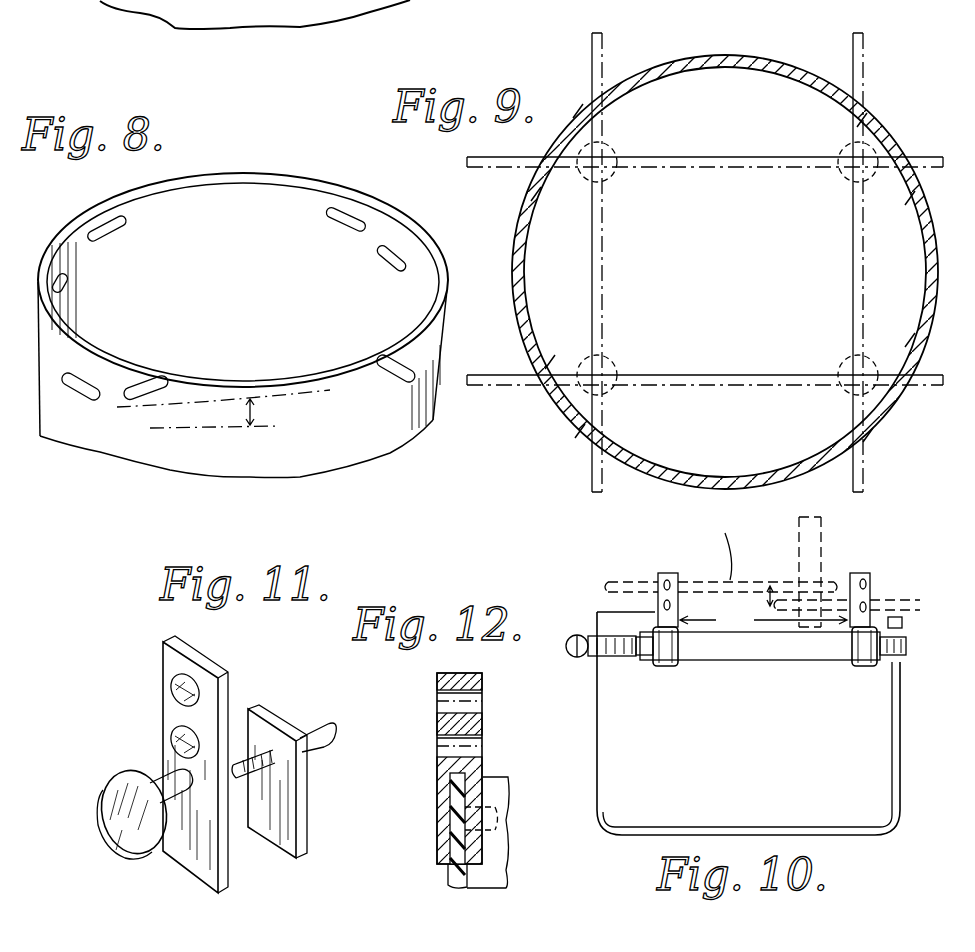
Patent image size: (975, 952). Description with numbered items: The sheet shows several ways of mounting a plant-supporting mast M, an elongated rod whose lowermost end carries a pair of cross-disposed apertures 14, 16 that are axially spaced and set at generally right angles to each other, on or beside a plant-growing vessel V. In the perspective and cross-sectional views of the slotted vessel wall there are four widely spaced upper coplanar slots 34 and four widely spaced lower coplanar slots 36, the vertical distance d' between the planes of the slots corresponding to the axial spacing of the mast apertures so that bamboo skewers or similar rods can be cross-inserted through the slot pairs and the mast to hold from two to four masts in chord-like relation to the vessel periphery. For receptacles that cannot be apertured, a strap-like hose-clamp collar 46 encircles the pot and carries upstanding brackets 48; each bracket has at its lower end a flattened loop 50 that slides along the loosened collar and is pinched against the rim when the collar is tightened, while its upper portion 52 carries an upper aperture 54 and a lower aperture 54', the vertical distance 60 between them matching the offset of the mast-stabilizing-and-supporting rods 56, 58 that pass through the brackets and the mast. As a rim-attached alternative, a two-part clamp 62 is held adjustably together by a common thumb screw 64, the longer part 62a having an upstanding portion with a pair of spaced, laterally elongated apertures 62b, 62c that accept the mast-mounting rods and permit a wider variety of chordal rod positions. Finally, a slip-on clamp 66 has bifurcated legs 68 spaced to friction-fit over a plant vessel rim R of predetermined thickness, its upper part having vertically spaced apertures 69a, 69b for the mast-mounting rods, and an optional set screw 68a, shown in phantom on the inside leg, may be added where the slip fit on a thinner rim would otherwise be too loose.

In FIG. 8, the upper coplanar slots 34 is at (125, 229).
In FIG. 9, the upper coplanar slots 34 is at (593, 110).
In FIG. 8, the lower coplanar slots 36 is at (65, 282).
In FIG. 9, the lower coplanar slots 36 is at (537, 187).
In FIG. 8, the vertical distance between slot planes d' is at (278, 414).
In FIG. 9, the plant-supporting mast M is at (613, 172).
In FIG. 10, the plant-supporting mast M is at (789, 529).
In FIG. 10, the plant-growing vessel V is at (752, 757).
In FIG. 10, the aperture 14 is at (807, 578).
In FIG. 10, the aperture 16 is at (812, 610).
In FIG. 10, the clamping collar 46 is at (760, 646).
In FIG. 10, the brackets 48 is at (763, 620).
In FIG. 10, the flattened loop 50 is at (658, 655).
In FIG. 10, the upper portion of bracket 52 is at (680, 598).
In FIG. 10, the upper aperture 54 is at (783, 546).
In FIG. 10, the lower aperture 54' is at (754, 589).
In FIG. 10, the mast-stabilizing-and-supporting rod 56 is at (903, 606).
In FIG. 10, the mast-stabilizing-and-supporting rod 58 is at (719, 541).
In FIG. 10, the vertical distance between holes 60 is at (767, 596).
In FIG. 11, the two-part clamp 62 is at (300, 697).
In FIG. 11, the longer clamp part 62a is at (170, 658).
In FIG. 11, the aperture 62b is at (173, 682).
In FIG. 11, the aperture 62c is at (175, 737).
In FIG. 11, the thumb screw 64 is at (135, 790).
In FIG. 12, the slip-on clamp 66 is at (416, 734).
In FIG. 12, the bifurcated legs 68 is at (470, 846).
In FIG. 12, the set screw 68a is at (500, 833).
In FIG. 12, the aperture 69a is at (475, 703).
In FIG. 12, the aperture 69b is at (475, 746).
In FIG. 12, the plant vessel rim R is at (507, 777).